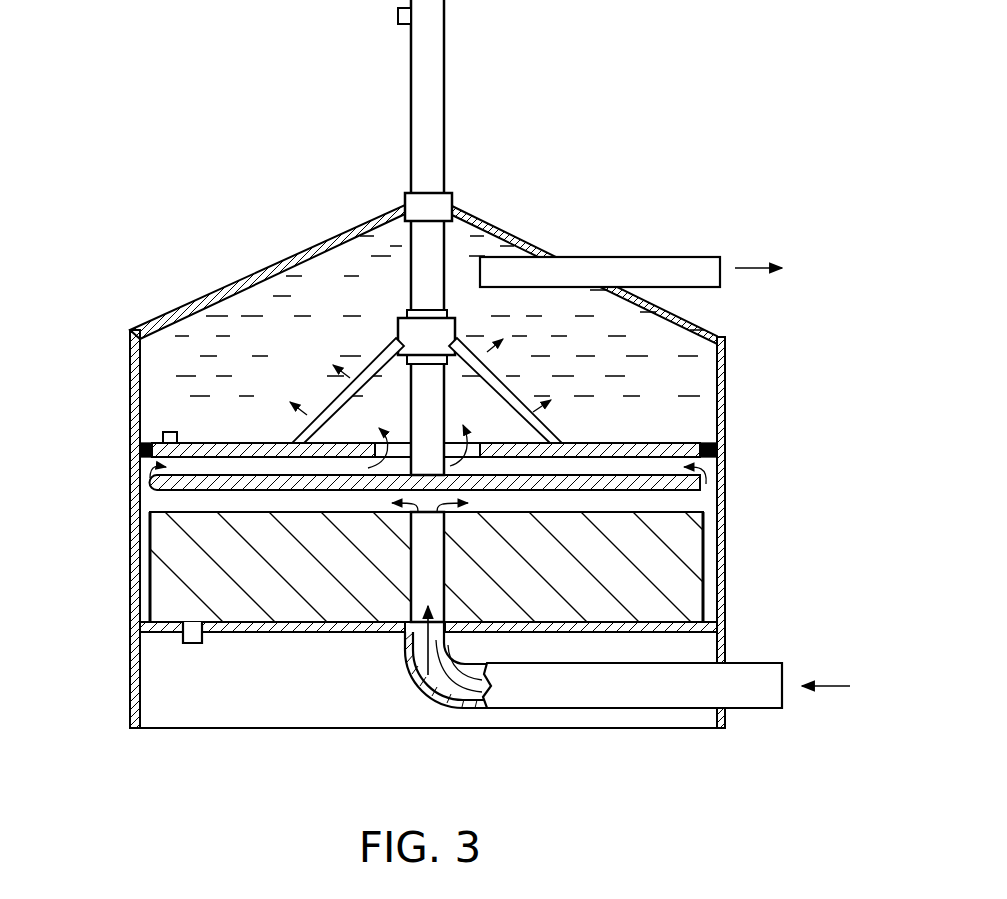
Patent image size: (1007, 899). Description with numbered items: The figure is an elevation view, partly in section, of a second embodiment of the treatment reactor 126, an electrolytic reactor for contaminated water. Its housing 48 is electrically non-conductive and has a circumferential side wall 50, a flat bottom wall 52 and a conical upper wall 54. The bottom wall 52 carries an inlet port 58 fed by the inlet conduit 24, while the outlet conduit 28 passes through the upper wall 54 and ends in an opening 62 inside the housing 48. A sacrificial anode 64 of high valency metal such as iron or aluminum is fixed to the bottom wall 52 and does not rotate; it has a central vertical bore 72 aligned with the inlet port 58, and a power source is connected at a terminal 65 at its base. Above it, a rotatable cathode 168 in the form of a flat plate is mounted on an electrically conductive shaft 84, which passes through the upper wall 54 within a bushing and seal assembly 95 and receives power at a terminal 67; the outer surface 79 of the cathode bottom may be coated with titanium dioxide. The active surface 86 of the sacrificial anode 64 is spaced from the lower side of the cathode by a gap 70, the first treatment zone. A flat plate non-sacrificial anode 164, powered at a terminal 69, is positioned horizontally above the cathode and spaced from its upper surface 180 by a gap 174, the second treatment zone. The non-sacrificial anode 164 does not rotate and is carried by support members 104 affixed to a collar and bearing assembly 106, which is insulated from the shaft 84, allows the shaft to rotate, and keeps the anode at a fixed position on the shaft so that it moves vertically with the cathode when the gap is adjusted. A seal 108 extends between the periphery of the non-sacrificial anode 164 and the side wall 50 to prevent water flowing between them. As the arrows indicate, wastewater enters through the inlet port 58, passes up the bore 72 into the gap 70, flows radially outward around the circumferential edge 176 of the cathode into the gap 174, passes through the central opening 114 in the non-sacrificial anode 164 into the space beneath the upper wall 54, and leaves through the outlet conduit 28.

The inlet conduit 24 is at (764, 675).
The outlet conduit 28 is at (695, 272).
The housing 48 is at (114, 313).
The side wall 50 is at (727, 364).
The bottom wall 52 is at (300, 633).
The upper wall 54 is at (274, 262).
The inlet port 58 is at (420, 630).
The opening 62 is at (478, 268).
The sacrificial anode 64 is at (690, 567).
The terminal 65 is at (193, 645).
The terminal 67 is at (398, 13).
The terminal 69 is at (162, 436).
The gap 70 is at (672, 506).
The vertical bore 72 is at (422, 573).
The outer surface 79 is at (253, 492).
The shaft 84 is at (430, 35).
The active surface 86 is at (185, 512).
The bushing and seal assembly 95 is at (418, 208).
The support members 104 is at (472, 397).
The collar and bearing assembly 106 is at (416, 332).
The seal 108 is at (140, 451).
The central opening 114 is at (510, 430).
The reactor 126 is at (598, 172).
The non-sacrificial anode 164 is at (192, 442).
The rotatable cathode 168 is at (638, 494).
The gap 174 is at (601, 468).
The circumferential edge 176 is at (152, 486).
The upper surface 180 is at (228, 473).